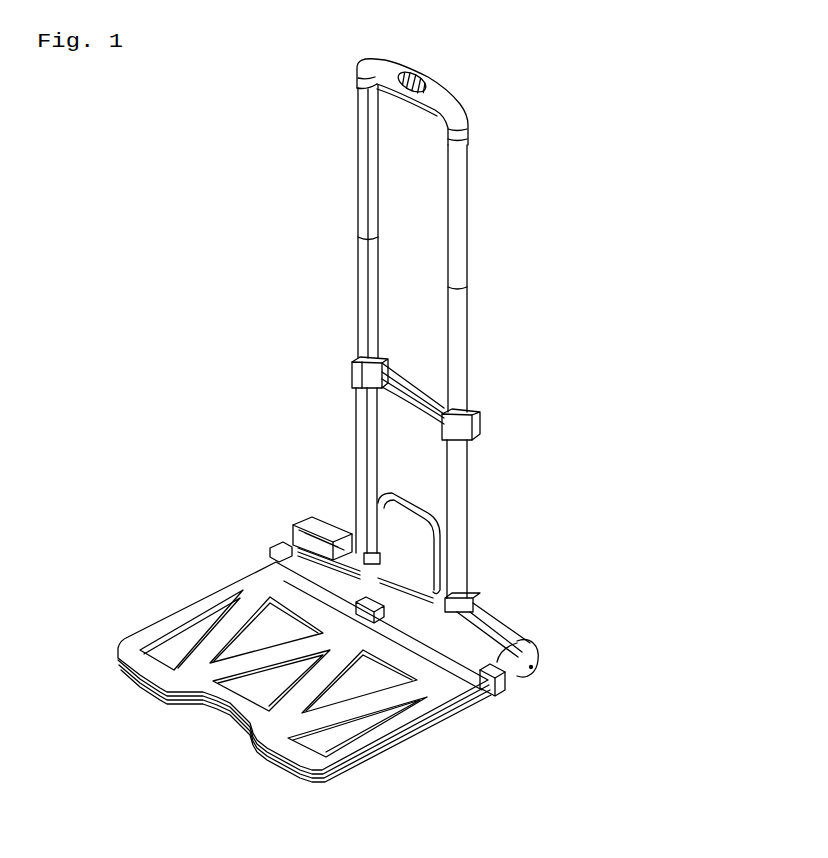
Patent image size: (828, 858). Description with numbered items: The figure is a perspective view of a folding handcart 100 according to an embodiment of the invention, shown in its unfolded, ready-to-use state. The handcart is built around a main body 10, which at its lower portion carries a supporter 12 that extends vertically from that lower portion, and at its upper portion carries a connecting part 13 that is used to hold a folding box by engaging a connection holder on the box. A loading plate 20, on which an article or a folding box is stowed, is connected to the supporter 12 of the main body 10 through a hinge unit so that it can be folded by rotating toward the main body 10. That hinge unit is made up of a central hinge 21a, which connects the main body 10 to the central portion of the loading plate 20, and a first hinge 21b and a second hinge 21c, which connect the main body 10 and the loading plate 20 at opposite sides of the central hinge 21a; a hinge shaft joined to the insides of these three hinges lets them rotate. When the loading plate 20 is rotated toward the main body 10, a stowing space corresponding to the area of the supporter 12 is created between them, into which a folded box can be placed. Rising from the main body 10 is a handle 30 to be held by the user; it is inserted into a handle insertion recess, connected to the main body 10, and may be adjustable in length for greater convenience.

The folding handcart 100 is at (577, 157).
The handle 30 is at (469, 175).
The connecting part 13 is at (402, 532).
The main body 10 is at (497, 613).
The supporter 12 is at (539, 652).
The central hinge 21a is at (295, 533).
The first hinge 21b is at (268, 552).
The second hinge 21c is at (497, 693).
The loading plate 20 is at (408, 707).